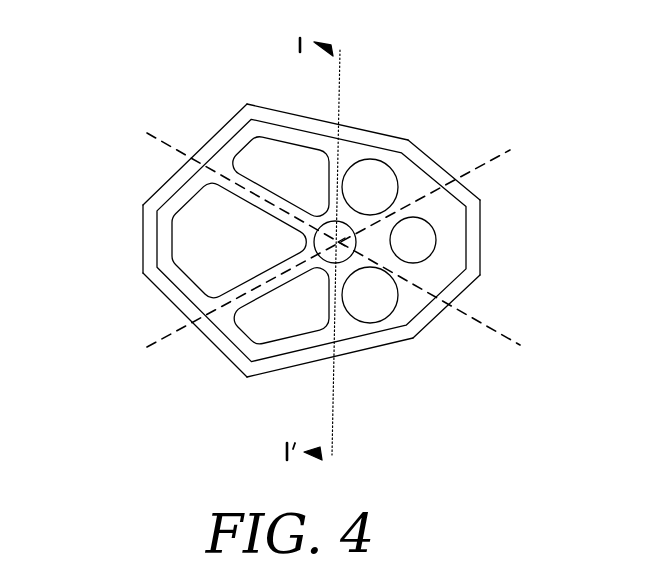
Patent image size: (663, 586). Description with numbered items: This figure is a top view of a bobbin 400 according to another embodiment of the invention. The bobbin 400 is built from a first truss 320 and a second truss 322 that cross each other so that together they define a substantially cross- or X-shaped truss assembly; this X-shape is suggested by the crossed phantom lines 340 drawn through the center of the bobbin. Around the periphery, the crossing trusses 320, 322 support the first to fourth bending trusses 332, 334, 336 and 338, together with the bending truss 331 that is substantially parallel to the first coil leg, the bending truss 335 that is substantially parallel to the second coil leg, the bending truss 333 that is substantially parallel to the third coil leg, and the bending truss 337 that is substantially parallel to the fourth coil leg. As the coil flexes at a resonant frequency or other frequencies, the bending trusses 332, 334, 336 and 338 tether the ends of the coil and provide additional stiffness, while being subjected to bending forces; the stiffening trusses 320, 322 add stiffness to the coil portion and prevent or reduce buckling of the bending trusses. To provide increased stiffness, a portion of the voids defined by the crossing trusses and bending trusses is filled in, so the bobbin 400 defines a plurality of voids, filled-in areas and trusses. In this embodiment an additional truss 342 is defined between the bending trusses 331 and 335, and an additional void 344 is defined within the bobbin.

The bobbin 400 is at (218, 52).
The first truss 320 is at (232, 186).
The second truss 322 is at (277, 282).
The bending truss 331 is at (278, 370).
The first bending truss 332 is at (168, 292).
The bending truss 333 is at (147, 240).
The second bending truss 334 is at (222, 136).
The bending truss 335 is at (317, 125).
The third bending truss 336 is at (432, 312).
The bending truss 337 is at (488, 240).
The fourth bending truss 338 is at (437, 167).
The crossed phantom lines 340 is at (505, 332).
The additional truss 342 is at (350, 170).
The additional void 344 is at (413, 218).